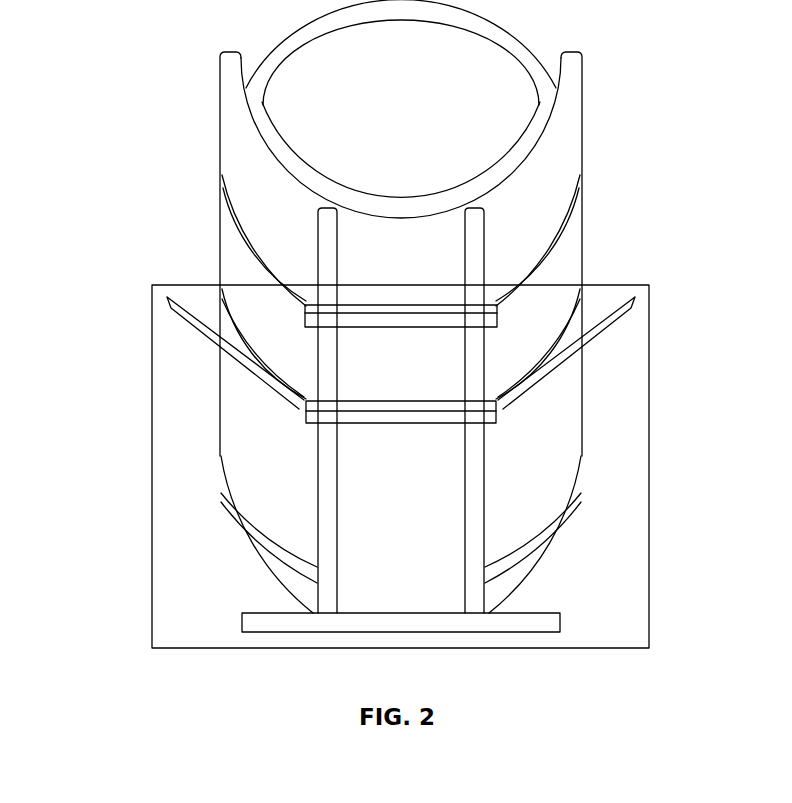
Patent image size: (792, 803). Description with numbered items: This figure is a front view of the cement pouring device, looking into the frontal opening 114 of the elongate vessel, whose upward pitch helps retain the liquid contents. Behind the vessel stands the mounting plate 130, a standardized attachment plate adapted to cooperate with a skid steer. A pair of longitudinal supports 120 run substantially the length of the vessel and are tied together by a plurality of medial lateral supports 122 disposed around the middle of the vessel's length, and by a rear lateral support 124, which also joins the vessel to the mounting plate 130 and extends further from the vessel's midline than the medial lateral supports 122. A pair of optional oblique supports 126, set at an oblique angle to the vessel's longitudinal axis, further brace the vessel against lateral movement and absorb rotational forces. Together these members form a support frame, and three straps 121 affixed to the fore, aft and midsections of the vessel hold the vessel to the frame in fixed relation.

The frontal opening 114 is at (419, 102).
The longitudinal supports 120 is at (317, 530).
The straps 121 is at (230, 233).
The medial lateral supports 122 is at (500, 311).
The rear lateral support 124 is at (563, 620).
The oblique supports 126 is at (165, 305).
The mounting plate 130 is at (605, 447).